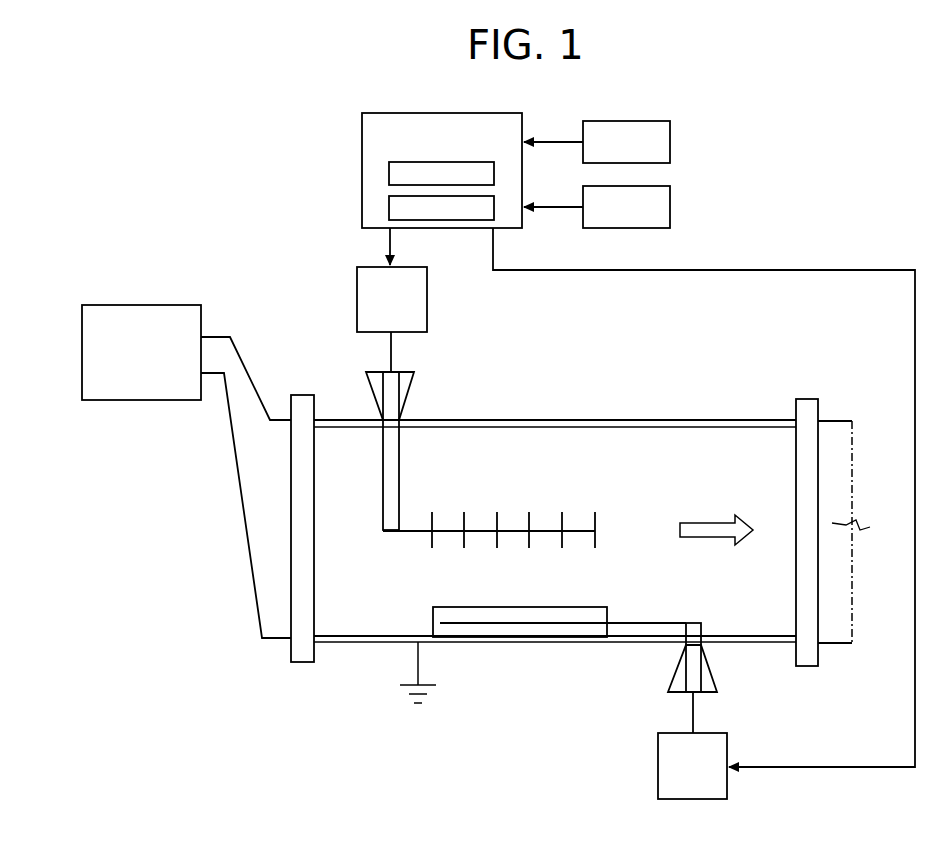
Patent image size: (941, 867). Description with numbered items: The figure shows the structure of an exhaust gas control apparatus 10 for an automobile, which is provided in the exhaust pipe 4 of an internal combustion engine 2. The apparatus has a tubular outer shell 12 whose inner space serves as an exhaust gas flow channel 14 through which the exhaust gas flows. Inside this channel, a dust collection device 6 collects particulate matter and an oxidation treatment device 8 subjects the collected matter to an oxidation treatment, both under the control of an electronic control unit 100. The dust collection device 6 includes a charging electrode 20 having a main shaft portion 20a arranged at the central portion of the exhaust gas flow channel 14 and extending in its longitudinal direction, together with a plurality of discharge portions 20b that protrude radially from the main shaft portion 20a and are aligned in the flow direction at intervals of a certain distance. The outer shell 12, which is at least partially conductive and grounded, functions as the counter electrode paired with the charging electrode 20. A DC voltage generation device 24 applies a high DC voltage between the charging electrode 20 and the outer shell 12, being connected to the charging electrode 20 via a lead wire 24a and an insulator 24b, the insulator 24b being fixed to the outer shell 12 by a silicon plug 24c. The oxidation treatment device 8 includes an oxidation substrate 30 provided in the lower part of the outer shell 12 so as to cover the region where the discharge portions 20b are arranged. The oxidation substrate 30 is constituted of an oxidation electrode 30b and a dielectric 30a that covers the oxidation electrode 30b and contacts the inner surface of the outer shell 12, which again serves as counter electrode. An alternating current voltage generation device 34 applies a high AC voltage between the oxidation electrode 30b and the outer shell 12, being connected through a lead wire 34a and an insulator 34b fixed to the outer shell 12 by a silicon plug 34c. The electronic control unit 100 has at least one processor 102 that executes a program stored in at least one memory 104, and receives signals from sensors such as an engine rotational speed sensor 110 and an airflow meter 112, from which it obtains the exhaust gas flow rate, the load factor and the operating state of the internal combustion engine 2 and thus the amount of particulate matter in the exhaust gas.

The internal combustion engine 2 is at (145, 305).
The exhaust pipe 4 is at (235, 348).
The dust collection device 6 is at (424, 398).
The oxidation treatment device 8 is at (650, 704).
The exhaust gas control apparatus 10 is at (580, 500).
The outer shell 12 is at (363, 642).
The exhaust gas flow channel 14 is at (642, 450).
The charging electrode 20 is at (515, 532).
The main shaft portion 20a is at (497, 525).
The discharge portions 20b is at (497, 536).
The DC voltage generation device 24 is at (356, 290).
The lead wire 24a is at (392, 352).
The insulator 24b is at (400, 466).
The silicon plug 24c is at (413, 385).
The oxidation substrate 30 is at (559, 631).
The dielectric 30a is at (529, 630).
The oxidation electrode 30b is at (548, 607).
The alternating current voltage generation device 34 is at (658, 765).
The lead wire 34a is at (694, 720).
The insulator 34b is at (703, 624).
The silicon plug 34c is at (712, 677).
The electronic control unit 100 is at (362, 139).
The processor 102 is at (389, 173).
The memory 104 is at (389, 200).
The engine rotational speed sensor 110 is at (670, 142).
The airflow meter 112 is at (670, 207).